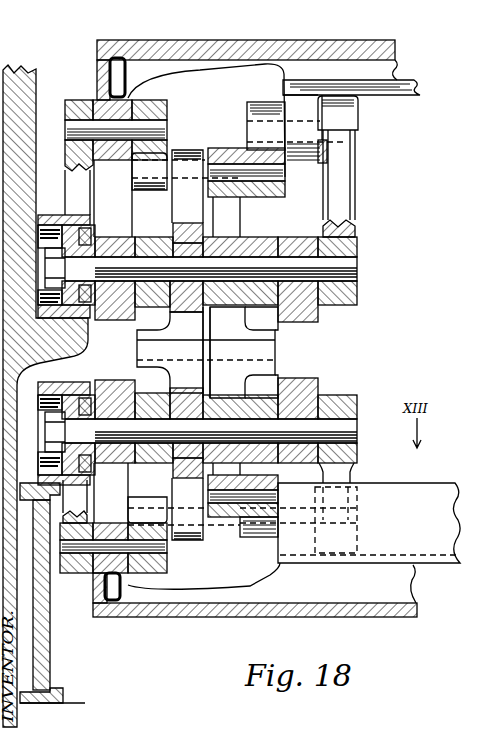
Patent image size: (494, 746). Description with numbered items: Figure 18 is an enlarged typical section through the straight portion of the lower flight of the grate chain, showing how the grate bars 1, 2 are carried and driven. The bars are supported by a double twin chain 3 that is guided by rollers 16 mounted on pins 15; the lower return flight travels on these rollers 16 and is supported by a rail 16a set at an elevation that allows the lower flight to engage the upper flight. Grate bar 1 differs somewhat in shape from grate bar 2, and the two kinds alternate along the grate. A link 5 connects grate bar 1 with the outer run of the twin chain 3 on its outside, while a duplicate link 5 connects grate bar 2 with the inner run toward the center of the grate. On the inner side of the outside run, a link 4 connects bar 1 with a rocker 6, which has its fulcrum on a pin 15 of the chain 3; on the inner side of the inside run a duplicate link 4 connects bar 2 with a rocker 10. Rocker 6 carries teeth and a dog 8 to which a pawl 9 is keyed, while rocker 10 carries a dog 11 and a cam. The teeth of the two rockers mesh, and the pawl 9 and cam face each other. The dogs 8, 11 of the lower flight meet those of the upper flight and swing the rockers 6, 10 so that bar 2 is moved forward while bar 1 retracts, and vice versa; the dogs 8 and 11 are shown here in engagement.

The grate bar 1 is at (97, 70).
The grate bar 2 is at (292, 110).
The double twin chain 3 is at (114, 243).
The link 4 is at (250, 113).
The link 5 is at (67, 191).
The rocker 6 is at (173, 213).
The dog 8 is at (138, 348).
The pawl 9 is at (261, 352).
The rocker 10 is at (240, 217).
The dog 11 is at (275, 350).
The pin 15 is at (358, 262).
The roller 16 is at (62, 214).
The rail 16a is at (50, 658).